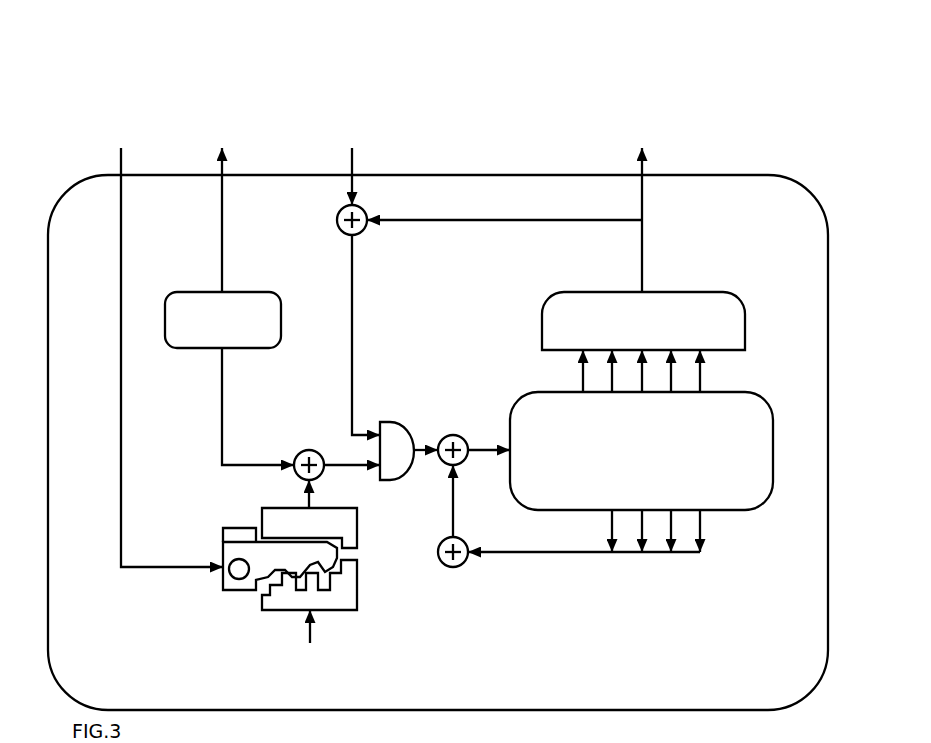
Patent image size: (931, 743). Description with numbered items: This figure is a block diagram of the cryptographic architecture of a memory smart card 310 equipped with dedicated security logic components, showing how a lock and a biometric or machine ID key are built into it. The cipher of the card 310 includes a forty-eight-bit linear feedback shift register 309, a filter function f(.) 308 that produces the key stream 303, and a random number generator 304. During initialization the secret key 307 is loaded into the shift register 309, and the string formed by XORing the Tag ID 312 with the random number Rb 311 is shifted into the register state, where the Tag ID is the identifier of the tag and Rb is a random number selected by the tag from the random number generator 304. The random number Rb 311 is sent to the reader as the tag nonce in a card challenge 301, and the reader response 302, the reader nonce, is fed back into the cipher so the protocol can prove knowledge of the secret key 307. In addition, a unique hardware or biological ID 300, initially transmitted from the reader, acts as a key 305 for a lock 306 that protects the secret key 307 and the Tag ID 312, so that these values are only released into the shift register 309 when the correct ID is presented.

The hardware or biological ID 300 is at (122, 92).
The card challenge 301 is at (222, 92).
The reader response 302 is at (352, 92).
The key stream 303 is at (640, 92).
The random number generator 304 is at (237, 281).
The key 305 is at (208, 525).
The lock 306 is at (370, 584).
The secret key 307 is at (385, 647).
The filter function 308 is at (542, 293).
The linear feedback shift register 309 is at (498, 407).
The card 310 is at (722, 168).
The random number Rb 311 is at (183, 253).
The Tag ID 312 is at (367, 682).